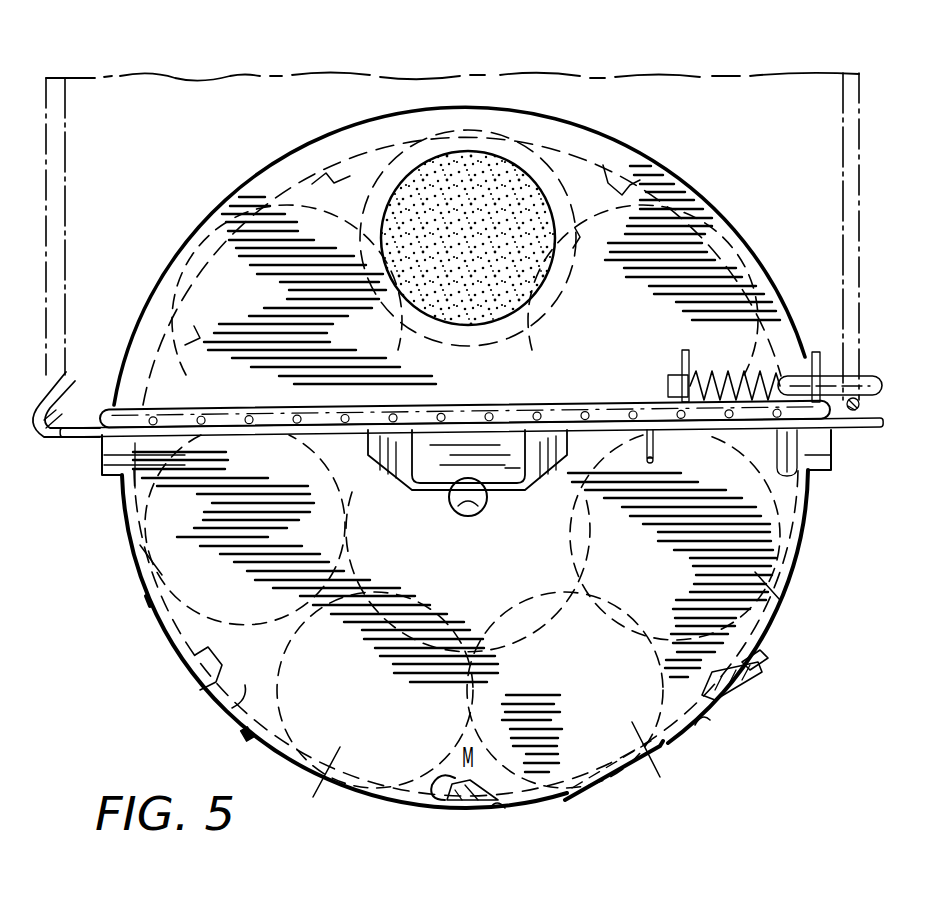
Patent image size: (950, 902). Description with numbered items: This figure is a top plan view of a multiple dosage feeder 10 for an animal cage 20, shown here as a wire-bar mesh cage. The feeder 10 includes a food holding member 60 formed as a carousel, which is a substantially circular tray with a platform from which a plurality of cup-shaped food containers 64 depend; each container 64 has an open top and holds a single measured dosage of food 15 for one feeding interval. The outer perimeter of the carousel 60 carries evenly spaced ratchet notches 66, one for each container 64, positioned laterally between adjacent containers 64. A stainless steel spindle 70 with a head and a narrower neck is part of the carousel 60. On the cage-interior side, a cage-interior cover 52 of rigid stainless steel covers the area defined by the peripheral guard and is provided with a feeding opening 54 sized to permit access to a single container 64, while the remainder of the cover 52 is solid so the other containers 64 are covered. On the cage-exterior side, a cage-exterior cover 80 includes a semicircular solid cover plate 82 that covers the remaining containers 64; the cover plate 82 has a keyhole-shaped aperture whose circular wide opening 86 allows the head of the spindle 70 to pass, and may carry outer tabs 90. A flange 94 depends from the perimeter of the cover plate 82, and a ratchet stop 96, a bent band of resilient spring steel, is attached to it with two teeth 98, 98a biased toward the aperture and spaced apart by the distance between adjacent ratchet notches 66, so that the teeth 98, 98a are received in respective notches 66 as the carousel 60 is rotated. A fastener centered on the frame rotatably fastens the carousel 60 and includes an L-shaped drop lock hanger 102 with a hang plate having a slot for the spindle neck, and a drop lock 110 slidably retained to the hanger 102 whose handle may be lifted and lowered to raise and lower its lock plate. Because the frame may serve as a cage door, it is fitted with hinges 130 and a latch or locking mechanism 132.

The multiple dosage feeder 10 is at (800, 534).
The food 15 is at (503, 165).
The animal cage 20 is at (860, 225).
The cage-interior cover 52 is at (740, 252).
The feeding opening 54 is at (414, 186).
The food holding member 60 is at (244, 735).
The food containers 64 is at (150, 560).
The ratchet notches 66 is at (205, 675).
The spindle 70 is at (455, 466).
The cage-exterior cover 80 is at (150, 600).
The cover plate 82 is at (232, 708).
The wide opening 86 is at (478, 512).
The outer tabs 90 is at (105, 462).
The flange 94 is at (630, 780).
The ratchet stop 96 is at (497, 808).
The tooth 98 is at (720, 692).
The tooth 98a is at (457, 803).
The drop lock hanger 102 is at (410, 472).
The drop lock 110 is at (515, 472).
The hinges 130 is at (42, 432).
The latch or locking mechanism 132 is at (815, 355).